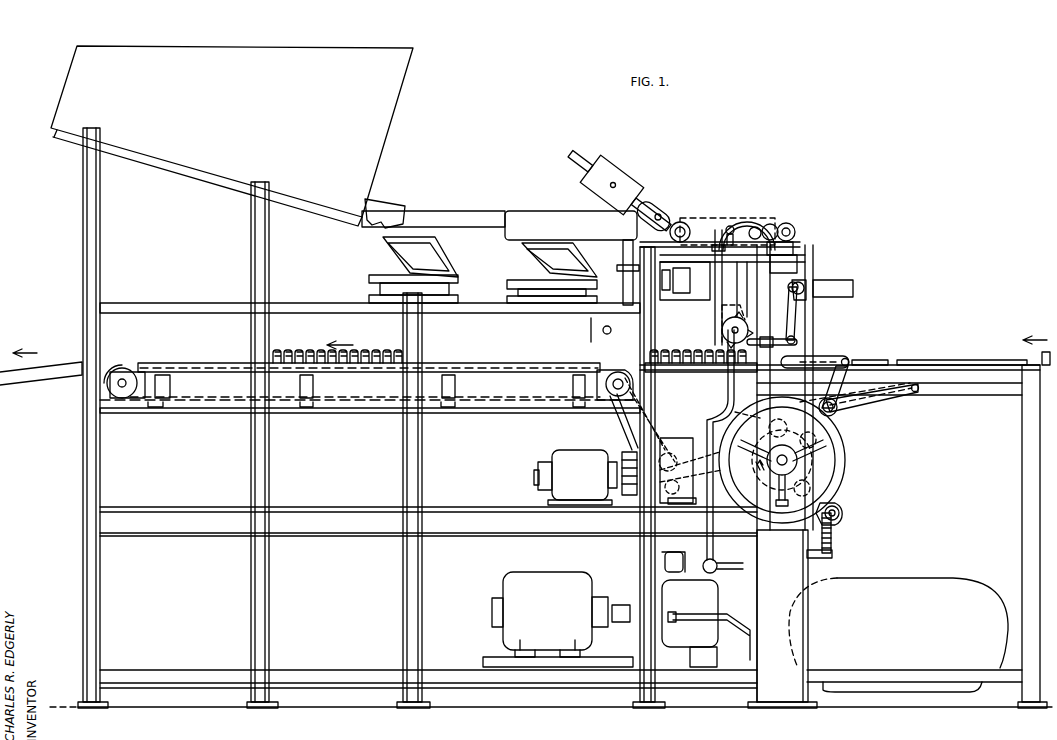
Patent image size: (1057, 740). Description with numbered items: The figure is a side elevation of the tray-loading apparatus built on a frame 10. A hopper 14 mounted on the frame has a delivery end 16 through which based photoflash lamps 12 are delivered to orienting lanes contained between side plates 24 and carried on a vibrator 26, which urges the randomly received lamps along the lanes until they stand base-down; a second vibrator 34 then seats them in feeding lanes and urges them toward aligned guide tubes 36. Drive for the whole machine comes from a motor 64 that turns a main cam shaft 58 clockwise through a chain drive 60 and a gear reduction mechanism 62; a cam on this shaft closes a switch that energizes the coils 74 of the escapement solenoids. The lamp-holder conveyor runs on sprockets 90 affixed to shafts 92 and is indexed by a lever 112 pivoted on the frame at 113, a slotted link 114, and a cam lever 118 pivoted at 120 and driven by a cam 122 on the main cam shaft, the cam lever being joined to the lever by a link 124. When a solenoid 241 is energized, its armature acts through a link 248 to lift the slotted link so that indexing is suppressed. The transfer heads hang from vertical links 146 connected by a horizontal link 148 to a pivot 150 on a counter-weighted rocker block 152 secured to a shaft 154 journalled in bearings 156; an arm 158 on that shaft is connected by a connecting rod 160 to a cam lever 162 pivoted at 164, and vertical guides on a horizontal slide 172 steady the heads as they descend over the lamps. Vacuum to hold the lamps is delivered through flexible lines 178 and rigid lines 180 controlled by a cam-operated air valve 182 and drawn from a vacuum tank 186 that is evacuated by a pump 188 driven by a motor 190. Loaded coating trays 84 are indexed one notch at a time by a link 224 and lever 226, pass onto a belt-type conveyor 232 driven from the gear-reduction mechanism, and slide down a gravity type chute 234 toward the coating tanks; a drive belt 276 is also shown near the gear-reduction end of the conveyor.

The frame 10 is at (400, 595).
The based photoflash lamps 12 is at (307, 350).
The hopper 14 is at (383, 117).
The delivery end 16 is at (390, 193).
The side plates 24 is at (460, 213).
The vibrator 26 is at (383, 267).
The second vibrator 34 is at (527, 275).
The guide tubes 36 is at (623, 255).
The main cam shaft 58 is at (822, 458).
The chain drive 60 is at (700, 440).
The gear reduction mechanism 62 is at (691, 500).
The motor 64 is at (573, 454).
The coils 74 is at (687, 277).
The coating trays 84 is at (622, 370).
The sprockets 90 is at (722, 333).
The shafts 92 is at (600, 329).
The lever 112 is at (813, 317).
The lever pivot 113 is at (735, 416).
The slotted link 114 is at (770, 330).
The cam lever 118 is at (838, 397).
The cam lever pivot 120 is at (825, 400).
The cam 122 is at (843, 470).
The link 124 is at (830, 358).
The vertical links 146 is at (790, 258).
The horizontal link 148 is at (790, 224).
The pivot 150 is at (770, 225).
The counter-weighted rocker block 152 is at (731, 227).
The shaft 154 is at (686, 222).
The bearings 156 is at (676, 212).
The arm 158 is at (708, 218).
The connecting rod 160 is at (730, 290).
The cam lever 162 is at (725, 539).
The cam lever pivot 164 is at (840, 513).
The horizontal slide 172 is at (835, 288).
The flexible lines 178 is at (745, 227).
The rigid lines 180 is at (707, 538).
The air valve 182 is at (843, 537).
The vacuum tank 186 is at (933, 587).
The pump 188 is at (707, 632).
The motor 190 is at (545, 572).
The link 224 is at (885, 395).
The lever 226 is at (845, 439).
The belt-type conveyor 232 is at (507, 360).
The gravity type chute 234 is at (35, 378).
The solenoid 241 is at (777, 250).
The link 248 is at (790, 305).
The drive belt 276 is at (624, 430).